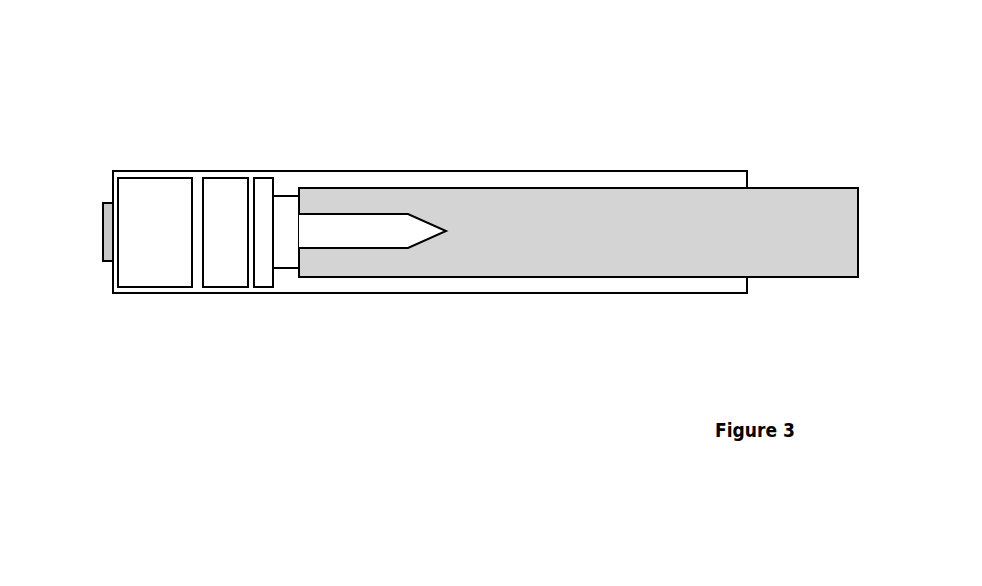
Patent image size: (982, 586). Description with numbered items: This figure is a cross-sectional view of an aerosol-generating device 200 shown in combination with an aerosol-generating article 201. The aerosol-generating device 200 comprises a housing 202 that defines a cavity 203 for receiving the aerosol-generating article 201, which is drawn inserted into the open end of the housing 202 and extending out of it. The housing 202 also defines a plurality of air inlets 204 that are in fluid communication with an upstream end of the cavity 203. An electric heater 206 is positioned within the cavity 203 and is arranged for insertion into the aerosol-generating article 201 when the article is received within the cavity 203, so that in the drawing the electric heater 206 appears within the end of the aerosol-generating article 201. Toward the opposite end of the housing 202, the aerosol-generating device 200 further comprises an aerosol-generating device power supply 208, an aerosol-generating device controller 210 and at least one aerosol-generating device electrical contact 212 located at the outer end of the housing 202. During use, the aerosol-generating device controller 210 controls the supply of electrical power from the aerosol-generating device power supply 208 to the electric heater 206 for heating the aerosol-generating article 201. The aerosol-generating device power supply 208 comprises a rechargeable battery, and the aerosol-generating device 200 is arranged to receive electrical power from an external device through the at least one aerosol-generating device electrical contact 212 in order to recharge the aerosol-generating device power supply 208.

The aerosol-generating device 200 is at (141, 166).
The aerosol-generating article 201 is at (779, 214).
The housing 202 is at (495, 293).
The cavity 203 is at (545, 173).
The air inlets 204 is at (278, 172).
The electric heater 206 is at (335, 227).
The aerosol-generating device power supply 208 is at (144, 258).
The aerosol-generating device controller 210 is at (228, 248).
The aerosol-generating device electrical contact 212 is at (103, 228).